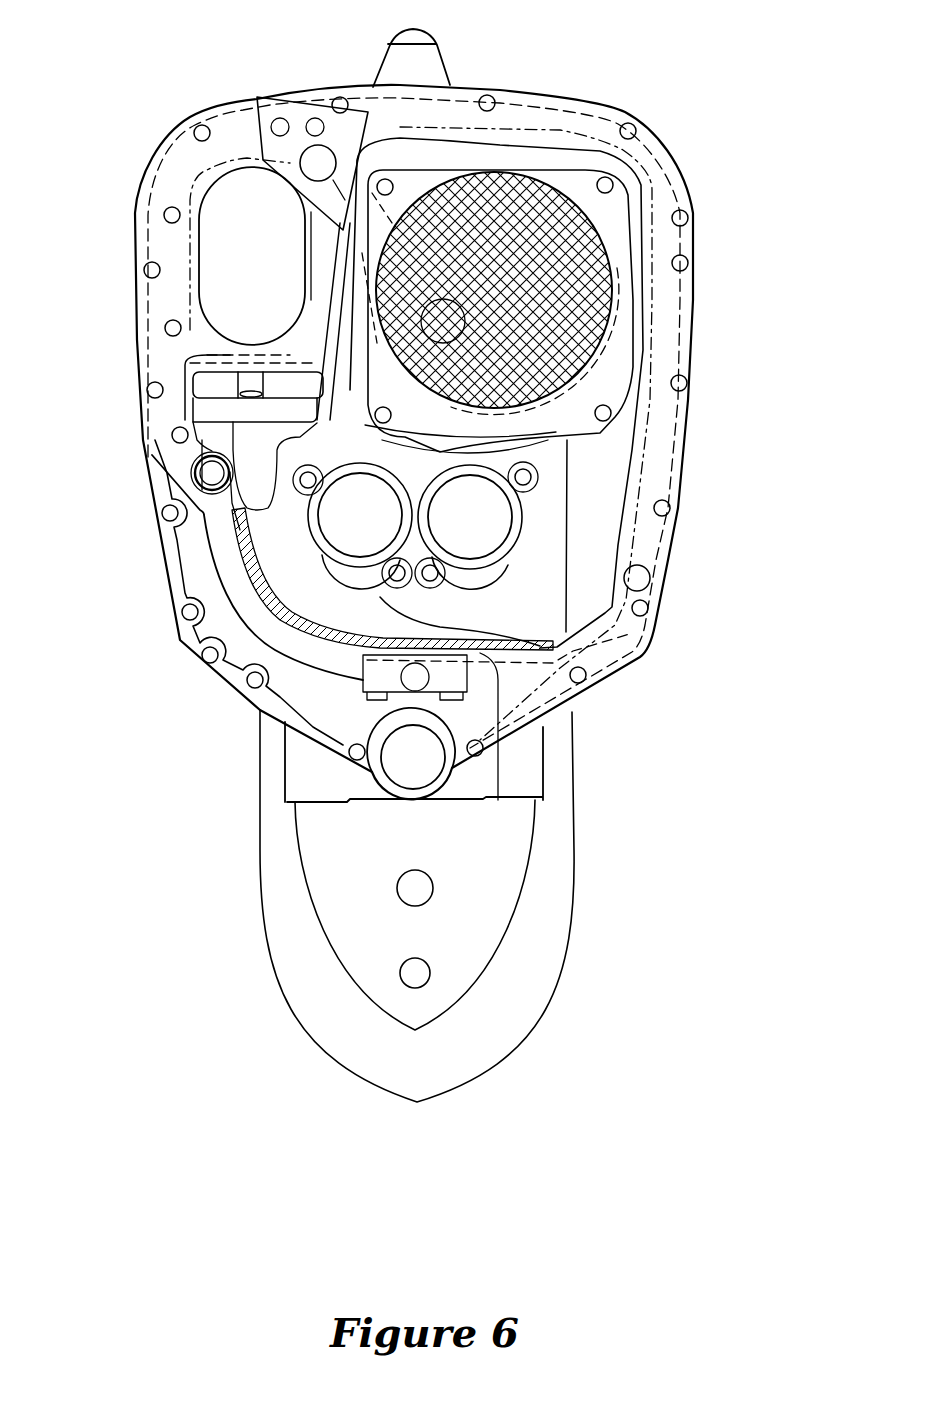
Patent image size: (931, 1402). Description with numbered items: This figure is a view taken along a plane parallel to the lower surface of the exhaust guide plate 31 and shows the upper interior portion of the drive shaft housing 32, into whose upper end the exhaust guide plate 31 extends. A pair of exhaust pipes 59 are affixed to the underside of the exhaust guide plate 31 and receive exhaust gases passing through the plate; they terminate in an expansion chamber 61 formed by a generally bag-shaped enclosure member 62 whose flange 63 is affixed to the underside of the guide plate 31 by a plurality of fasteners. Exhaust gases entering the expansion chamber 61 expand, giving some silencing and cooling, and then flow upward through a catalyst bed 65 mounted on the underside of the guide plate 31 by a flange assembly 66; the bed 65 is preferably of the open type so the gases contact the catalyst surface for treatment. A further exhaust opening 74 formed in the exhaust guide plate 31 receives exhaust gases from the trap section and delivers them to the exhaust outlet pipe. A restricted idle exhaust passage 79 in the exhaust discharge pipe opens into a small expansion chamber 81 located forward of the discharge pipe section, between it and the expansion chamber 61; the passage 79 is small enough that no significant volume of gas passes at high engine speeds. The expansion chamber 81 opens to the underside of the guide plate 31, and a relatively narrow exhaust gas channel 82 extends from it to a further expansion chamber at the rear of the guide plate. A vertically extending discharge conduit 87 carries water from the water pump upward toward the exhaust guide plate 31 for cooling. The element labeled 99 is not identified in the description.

The exhaust guide plate 31 is at (170, 624).
The drive shaft housing 32 is at (247, 922).
The exhaust pipes 59 is at (372, 587).
The expansion chamber 61 is at (612, 525).
The enclosure member 62 is at (628, 485).
The flange 63 is at (670, 300).
The catalyst bed 65 is at (527, 193).
The flange assembly 66 is at (607, 213).
The exhaust opening 74 is at (204, 251).
The idle exhaust passage 79 is at (203, 310).
The expansion chamber 81 is at (203, 387).
The exhaust gas channel 82 is at (317, 300).
The discharge conduit 87 is at (263, 632).
The bracket 99 is at (318, 163).